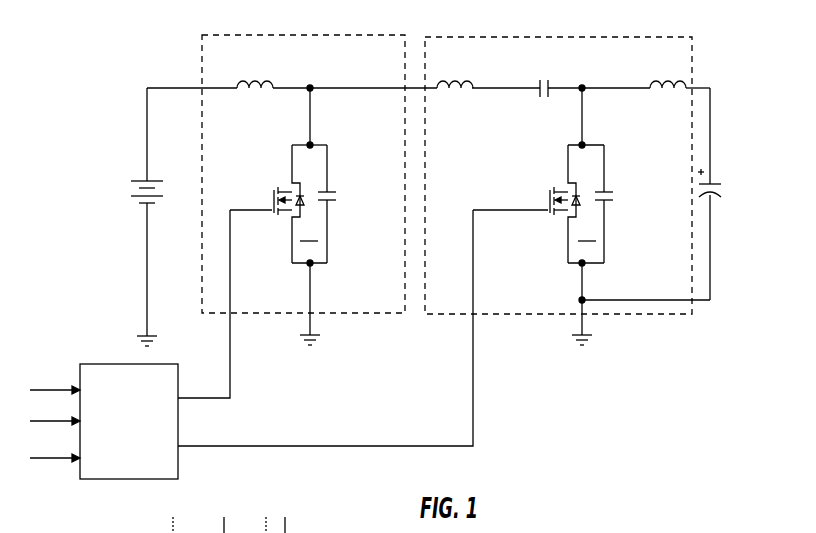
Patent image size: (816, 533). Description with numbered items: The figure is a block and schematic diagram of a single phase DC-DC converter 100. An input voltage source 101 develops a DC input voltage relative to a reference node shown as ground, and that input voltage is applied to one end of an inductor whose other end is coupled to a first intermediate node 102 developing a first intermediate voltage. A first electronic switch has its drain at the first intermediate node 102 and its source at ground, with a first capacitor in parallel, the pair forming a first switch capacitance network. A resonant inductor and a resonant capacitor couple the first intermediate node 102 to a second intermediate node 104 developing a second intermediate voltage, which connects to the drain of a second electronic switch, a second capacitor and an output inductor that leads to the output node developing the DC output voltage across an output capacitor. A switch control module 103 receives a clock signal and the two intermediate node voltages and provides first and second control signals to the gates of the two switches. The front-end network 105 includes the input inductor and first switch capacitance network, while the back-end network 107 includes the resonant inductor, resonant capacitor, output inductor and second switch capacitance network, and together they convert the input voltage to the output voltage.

The single phase DC-DC converter 100 is at (455, 13).
The input voltage source 101 is at (135, 182).
The first intermediate node 102 is at (313, 91).
The switch control module 103 is at (143, 449).
The second intermediate node 104 is at (584, 91).
The front-end network 105 is at (345, 313).
The back-end network 107 is at (642, 314).